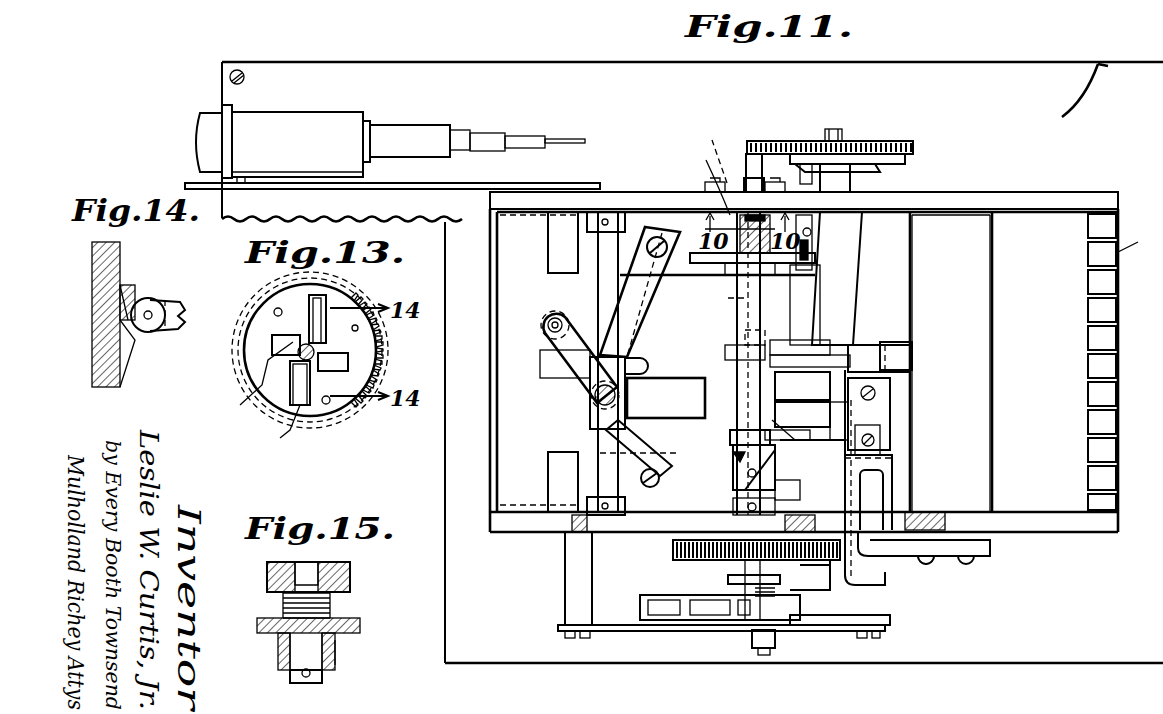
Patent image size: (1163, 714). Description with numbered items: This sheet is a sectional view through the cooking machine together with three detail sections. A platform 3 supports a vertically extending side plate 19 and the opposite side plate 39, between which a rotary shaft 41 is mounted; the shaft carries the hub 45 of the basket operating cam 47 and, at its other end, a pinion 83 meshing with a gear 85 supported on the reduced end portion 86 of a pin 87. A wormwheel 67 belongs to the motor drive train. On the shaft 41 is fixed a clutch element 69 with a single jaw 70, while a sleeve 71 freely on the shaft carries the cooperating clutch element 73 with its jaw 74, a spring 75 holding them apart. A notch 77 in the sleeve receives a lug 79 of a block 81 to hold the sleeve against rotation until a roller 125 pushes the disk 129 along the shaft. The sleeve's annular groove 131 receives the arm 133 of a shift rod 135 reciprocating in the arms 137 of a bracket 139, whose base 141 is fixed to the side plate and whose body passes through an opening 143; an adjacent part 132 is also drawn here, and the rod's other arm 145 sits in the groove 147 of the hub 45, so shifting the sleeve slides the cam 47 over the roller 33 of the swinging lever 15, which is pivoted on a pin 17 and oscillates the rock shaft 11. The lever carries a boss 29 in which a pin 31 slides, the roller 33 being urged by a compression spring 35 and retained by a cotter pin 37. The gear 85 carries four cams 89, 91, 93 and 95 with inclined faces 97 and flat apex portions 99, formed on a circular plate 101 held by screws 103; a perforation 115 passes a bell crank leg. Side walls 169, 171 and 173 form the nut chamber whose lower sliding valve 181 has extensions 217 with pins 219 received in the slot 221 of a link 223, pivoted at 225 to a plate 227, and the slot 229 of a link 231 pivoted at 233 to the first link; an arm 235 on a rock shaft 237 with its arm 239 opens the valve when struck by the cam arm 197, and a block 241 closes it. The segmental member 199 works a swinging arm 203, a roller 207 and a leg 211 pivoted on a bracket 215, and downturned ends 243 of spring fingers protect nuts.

In FIG. 11, the platform 3 is at (965, 650).
In FIG. 11, the rock shaft 11 is at (745, 570).
In FIG. 15, the swinging lever 15 is at (360, 625).
In FIG. 11, the pin 17 is at (1137, 242).
In FIG. 11, the side plate 19 is at (1030, 530).
In FIG. 15, the boss 29 is at (357, 652).
In FIG. 15, the pin 31 is at (290, 650).
In FIG. 15, the roller 33 is at (350, 578).
In FIG. 15, the compression spring 35 is at (330, 605).
In FIG. 15, the cotter pin 37 is at (305, 683).
In FIG. 11, the side plate 39 is at (975, 191).
In FIG. 11, the rotary shaft 41 is at (719, 297).
In FIG. 11, the hub 45 is at (780, 602).
In FIG. 11, the cam 47 is at (800, 628).
In FIG. 11, the wormwheel 67 is at (673, 548).
In FIG. 11, the clutch element 69 is at (775, 470).
In FIG. 11, the jaw 70 is at (780, 478).
In FIG. 11, the sleeve 71 is at (735, 330).
In FIG. 11, the clutch element 73 is at (730, 440).
In FIG. 11, the jaw 74 is at (768, 420).
In FIG. 11, the spring 75 is at (733, 458).
In FIG. 11, the notch 77 is at (755, 234).
In FIG. 11, the lug 79 is at (711, 156).
In FIG. 11, the block 81 is at (710, 185).
In FIG. 11, the pinion 83 is at (745, 147).
In FIG. 11, the gear 85 is at (888, 125).
In FIG. 14, the gear 85 is at (92, 375).
In FIG. 13, the gear 85 is at (380, 352).
In FIG. 13, the reduced end portion 86 is at (326, 404).
In FIG. 11, the pin 87 is at (850, 182).
In FIG. 13, the cam 89 is at (326, 296).
In FIG. 13, the cam 91 is at (279, 426).
In FIG. 13, the cam 93 is at (250, 381).
In FIG. 14, the cam 95 is at (128, 282).
In FIG. 13, the cam 95 is at (348, 362).
In FIG. 14, the inclined faces 97 is at (140, 330).
In FIG. 13, the inclined faces 97 is at (326, 330).
In FIG. 14, the flat apex portions 99 is at (135, 290).
In FIG. 13, the flat apex portions 99 is at (290, 380).
In FIG. 14, the circular plate 101 is at (135, 365).
In FIG. 13, the circular plate 101 is at (262, 318).
In FIG. 13, the screws 103 is at (280, 306).
In FIG. 11, the through perforation 115 is at (650, 630).
In FIG. 11, the roller 125 is at (838, 242).
In FIG. 11, the disk 129 is at (805, 265).
In FIG. 11, the annular circumferential groove 131 is at (765, 432).
In FIG. 11, the bar 132 is at (836, 485).
In FIG. 11, the arm 133 is at (812, 432).
In FIG. 11, the shift rod 135 is at (875, 490).
In FIG. 11, the arms 137 is at (880, 560).
In FIG. 11, the bracket 139 is at (880, 508).
In FIG. 11, the base 141 is at (958, 548).
In FIG. 11, the opening 143 is at (838, 505).
In FIG. 11, the arm 145 is at (810, 578).
In FIG. 11, the annular circumferential groove 147 is at (728, 582).
In FIG. 11, the side wall 169 is at (912, 300).
In FIG. 11, the side wall 171 is at (945, 215).
In FIG. 11, the side wall 173 is at (1010, 508).
In FIG. 11, the lower sliding valve 181 is at (908, 275).
In FIG. 11, the cam arm 197 is at (802, 385).
In FIG. 11, the segmental member 199 is at (800, 349).
In FIG. 11, the swinging arm 203 is at (809, 347).
In FIG. 11, the roller 207 is at (728, 356).
In FIG. 11, the leg 211 is at (905, 355).
In FIG. 11, the bracket 215 is at (852, 288).
In FIG. 11, the extensions 217 is at (555, 245).
In FIG. 11, the pin 219 is at (664, 238).
In FIG. 11, the slot 221 is at (633, 465).
In FIG. 11, the link 223 is at (578, 405).
In FIG. 11, the pivotal connection 225 is at (548, 318).
In FIG. 11, the plate 227 is at (510, 410).
In FIG. 11, the slot 229 is at (660, 282).
In FIG. 11, the link 231 is at (655, 322).
In FIG. 11, the pivotal connection 233 is at (588, 408).
In FIG. 11, the arm 235 is at (648, 365).
In FIG. 11, the rock shaft 237 is at (600, 288).
In FIG. 11, the arm 239 is at (668, 364).
In FIG. 11, the block 241 is at (885, 410).
In FIG. 11, the downturned ends 243 is at (1088, 258).